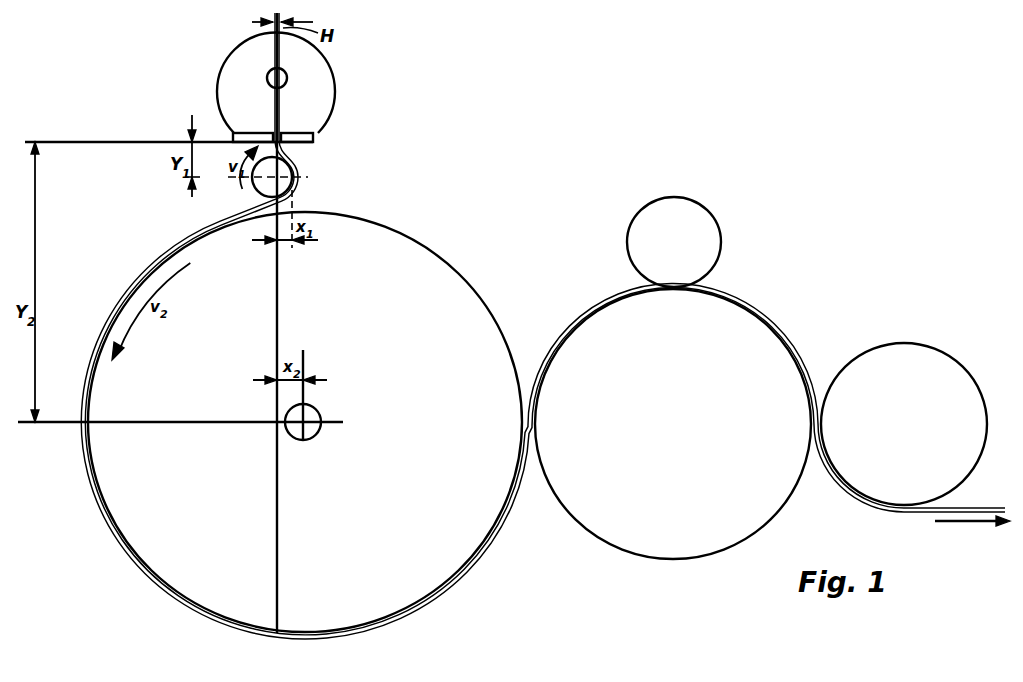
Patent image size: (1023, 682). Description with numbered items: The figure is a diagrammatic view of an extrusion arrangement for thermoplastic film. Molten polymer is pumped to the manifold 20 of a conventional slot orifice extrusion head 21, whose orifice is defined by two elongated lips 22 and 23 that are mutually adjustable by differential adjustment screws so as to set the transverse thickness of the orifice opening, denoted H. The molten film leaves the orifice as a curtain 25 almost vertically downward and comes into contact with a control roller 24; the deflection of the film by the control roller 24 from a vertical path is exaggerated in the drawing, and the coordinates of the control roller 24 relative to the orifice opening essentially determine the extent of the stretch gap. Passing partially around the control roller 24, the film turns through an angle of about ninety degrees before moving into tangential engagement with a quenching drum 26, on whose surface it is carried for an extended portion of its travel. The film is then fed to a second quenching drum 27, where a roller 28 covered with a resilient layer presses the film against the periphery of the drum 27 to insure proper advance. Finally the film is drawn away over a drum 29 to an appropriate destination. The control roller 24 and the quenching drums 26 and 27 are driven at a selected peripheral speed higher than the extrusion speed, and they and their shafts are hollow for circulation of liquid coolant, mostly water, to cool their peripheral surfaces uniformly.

The manifold 20 is at (290, 82).
The slot orifice extrusion head 21 is at (238, 61).
The elongated lip 22 is at (240, 135).
The elongated lip 23 is at (318, 136).
The control roller 24 is at (265, 187).
The curtain 25 is at (296, 163).
The quenching drum 26 is at (420, 252).
The second quenching drum 27 is at (752, 326).
The roller 28 is at (710, 243).
The drum 29 is at (937, 360).